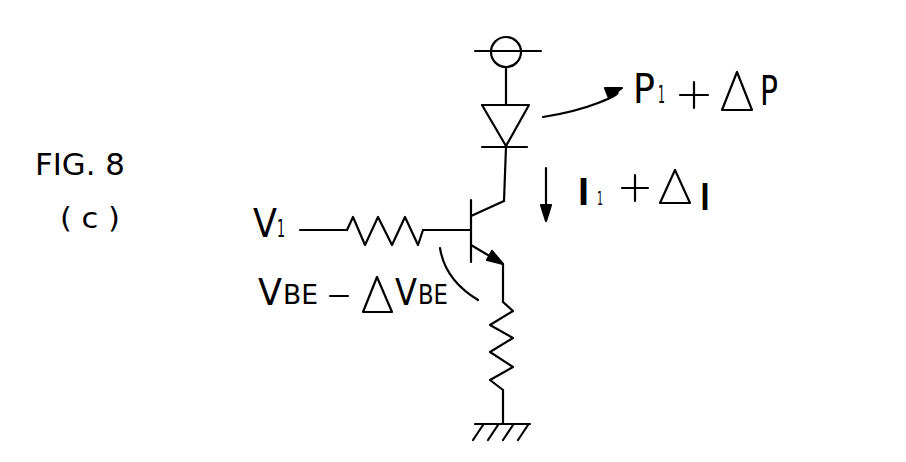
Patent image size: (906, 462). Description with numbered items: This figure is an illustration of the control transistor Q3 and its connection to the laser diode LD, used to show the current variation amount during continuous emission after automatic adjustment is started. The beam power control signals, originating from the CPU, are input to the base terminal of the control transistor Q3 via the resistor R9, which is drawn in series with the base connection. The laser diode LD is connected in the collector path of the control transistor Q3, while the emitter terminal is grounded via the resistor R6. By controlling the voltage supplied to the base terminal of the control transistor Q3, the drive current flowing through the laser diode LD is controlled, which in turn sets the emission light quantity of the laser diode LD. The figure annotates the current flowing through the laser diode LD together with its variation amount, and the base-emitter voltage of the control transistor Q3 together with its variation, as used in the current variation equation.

The laser diode LD is at (473, 125).
The control transistor Q3 is at (503, 227).
The resistor R6 is at (529, 346).
The resistor R9 is at (385, 209).